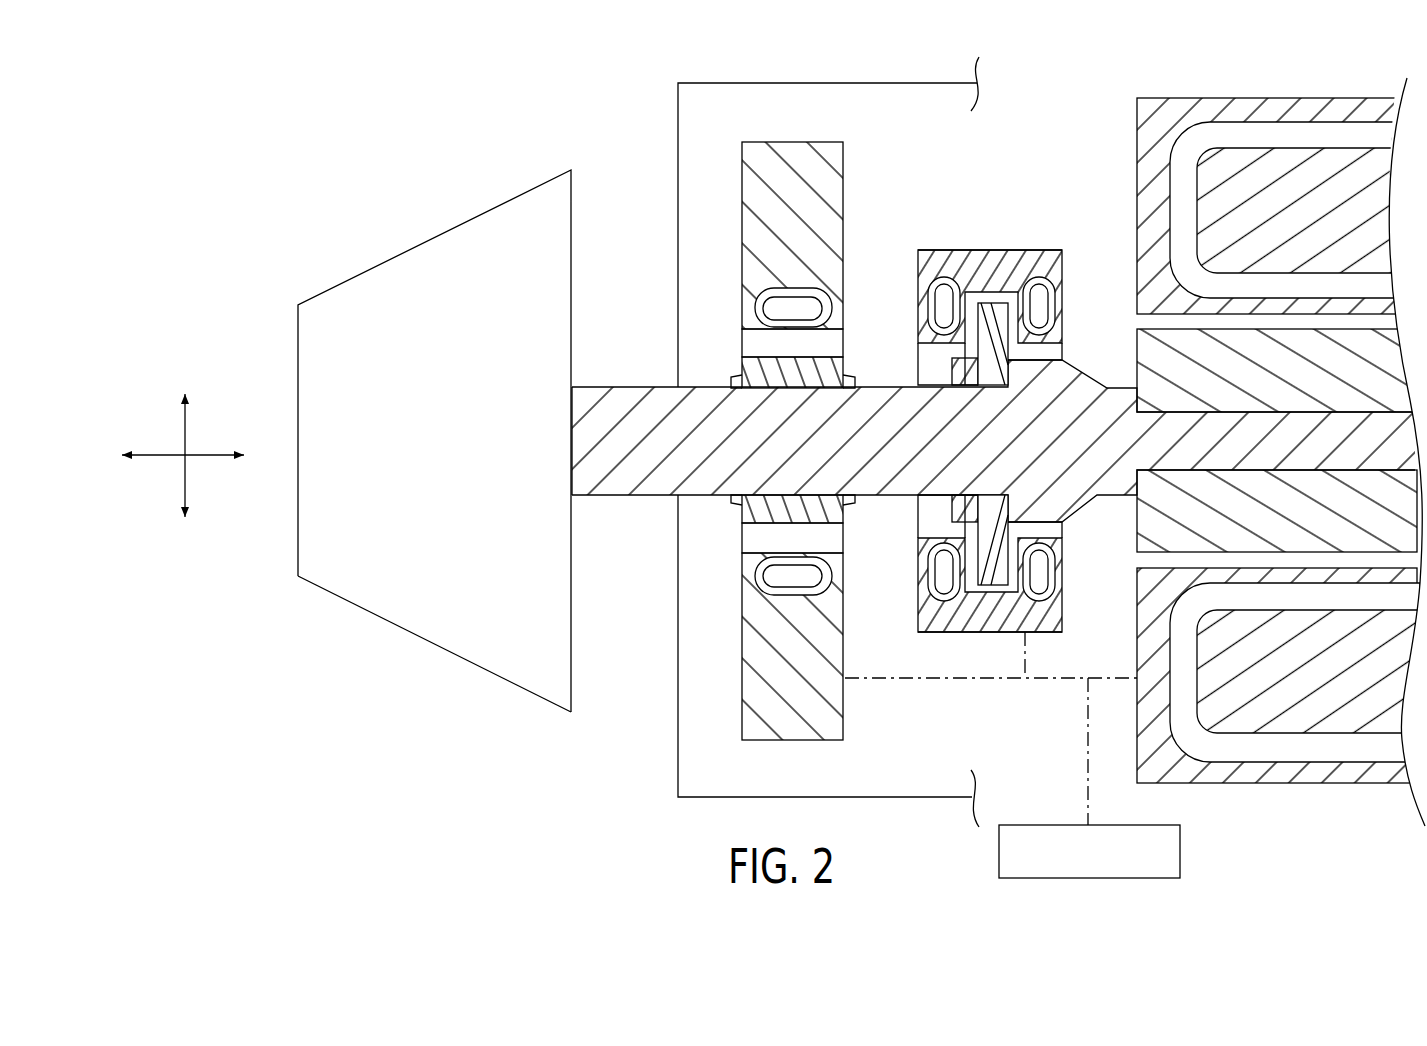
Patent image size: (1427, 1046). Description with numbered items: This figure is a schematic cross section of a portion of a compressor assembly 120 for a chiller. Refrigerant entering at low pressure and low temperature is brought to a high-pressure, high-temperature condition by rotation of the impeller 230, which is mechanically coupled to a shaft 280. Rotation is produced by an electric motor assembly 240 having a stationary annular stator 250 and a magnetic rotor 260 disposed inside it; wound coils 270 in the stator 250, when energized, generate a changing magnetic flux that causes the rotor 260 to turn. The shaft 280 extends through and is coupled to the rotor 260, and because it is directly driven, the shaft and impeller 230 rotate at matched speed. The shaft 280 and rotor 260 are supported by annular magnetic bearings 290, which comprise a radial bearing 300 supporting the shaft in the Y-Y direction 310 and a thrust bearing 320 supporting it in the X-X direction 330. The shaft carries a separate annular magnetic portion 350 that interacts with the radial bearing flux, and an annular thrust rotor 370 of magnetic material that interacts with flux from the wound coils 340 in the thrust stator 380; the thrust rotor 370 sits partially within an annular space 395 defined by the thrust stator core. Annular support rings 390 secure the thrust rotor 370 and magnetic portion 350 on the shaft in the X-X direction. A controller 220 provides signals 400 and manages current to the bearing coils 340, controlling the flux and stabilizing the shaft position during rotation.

The compressor assembly 120 is at (405, 162).
The controller 220 is at (1180, 852).
The impeller 230 is at (436, 646).
The motor assembly 240 is at (745, 70).
The stator 250 is at (1136, 205).
The rotor 260 is at (1135, 357).
The wound coils 270 is at (1203, 124).
The shaft 280 is at (612, 386).
The bearings 290 is at (937, 250).
The radial bearing 300 is at (793, 141).
The Y-Y direction 310 is at (182, 430).
The thrust bearing 320 is at (953, 250).
The X-X direction 330 is at (207, 462).
The wound coils 340 is at (832, 308).
The magnetic portion 350 is at (845, 357).
The thrust rotor 370 is at (975, 590).
The thrust stator 380 is at (991, 250).
The annular support rings 390 is at (857, 381).
The annular space 395 is at (1060, 618).
The signals 400 is at (1088, 750).